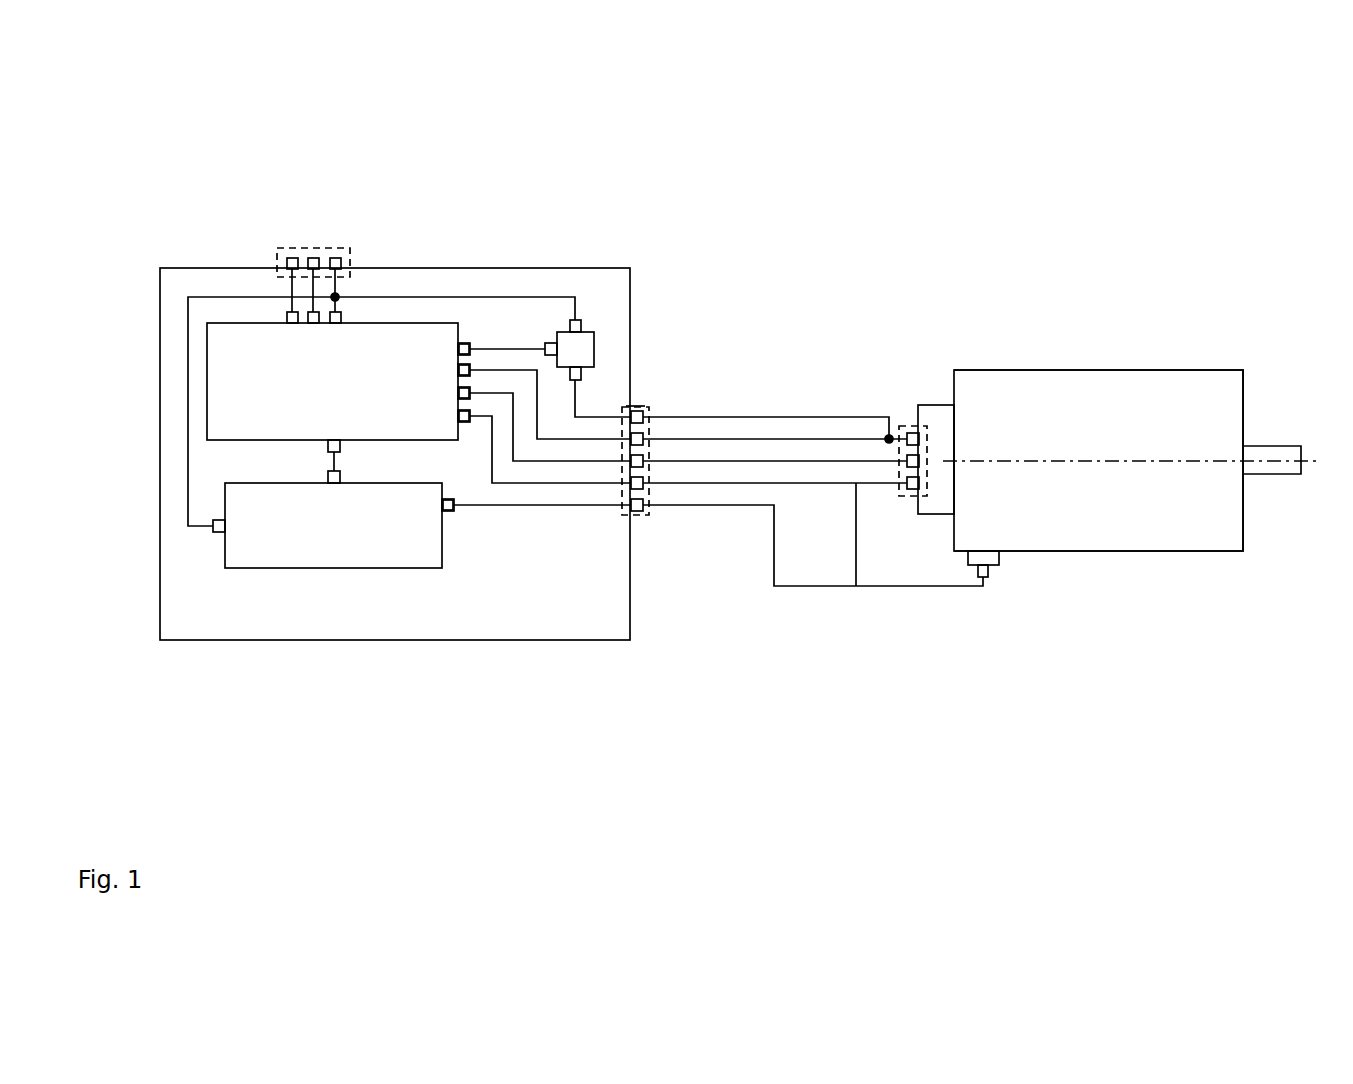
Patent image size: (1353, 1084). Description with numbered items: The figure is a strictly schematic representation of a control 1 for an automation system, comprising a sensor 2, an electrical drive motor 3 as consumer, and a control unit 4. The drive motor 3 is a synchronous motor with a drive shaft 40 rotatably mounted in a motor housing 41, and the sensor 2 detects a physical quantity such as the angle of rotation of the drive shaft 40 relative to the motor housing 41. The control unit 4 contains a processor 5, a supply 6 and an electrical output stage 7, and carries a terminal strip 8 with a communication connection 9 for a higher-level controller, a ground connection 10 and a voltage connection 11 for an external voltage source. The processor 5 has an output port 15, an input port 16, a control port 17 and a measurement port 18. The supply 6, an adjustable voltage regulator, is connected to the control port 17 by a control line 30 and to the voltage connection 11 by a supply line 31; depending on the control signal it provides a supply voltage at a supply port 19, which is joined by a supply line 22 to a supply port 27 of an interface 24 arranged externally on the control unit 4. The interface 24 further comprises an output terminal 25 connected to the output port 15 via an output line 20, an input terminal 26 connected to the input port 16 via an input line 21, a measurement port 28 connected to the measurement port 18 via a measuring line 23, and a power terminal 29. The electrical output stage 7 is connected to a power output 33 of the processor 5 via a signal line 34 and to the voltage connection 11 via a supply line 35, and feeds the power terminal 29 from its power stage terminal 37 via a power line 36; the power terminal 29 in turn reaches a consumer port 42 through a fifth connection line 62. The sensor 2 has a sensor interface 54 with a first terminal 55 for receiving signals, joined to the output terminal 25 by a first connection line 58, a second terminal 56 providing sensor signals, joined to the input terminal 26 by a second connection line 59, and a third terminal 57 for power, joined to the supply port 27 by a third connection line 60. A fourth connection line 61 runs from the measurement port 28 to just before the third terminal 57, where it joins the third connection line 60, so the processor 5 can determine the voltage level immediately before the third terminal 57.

The control 1 is at (1207, 190).
The sensor 2 is at (937, 405).
The drive motor 3 is at (1105, 370).
The control unit 4 is at (158, 302).
The processor 5 is at (437, 323).
The supply 6 is at (590, 331).
The electrical output stage 7 is at (237, 569).
The terminal strip 8 is at (293, 248).
The communication connection 9 is at (288, 265).
The ground connection 10 is at (313, 258).
The voltage connection 11 is at (337, 258).
The output port 15 is at (467, 425).
The input port 16 is at (460, 392).
The control port 17 is at (465, 343).
The measurement port 18 is at (460, 370).
The supply port 19 is at (578, 383).
The output line 20 is at (600, 483).
The input line 21 is at (573, 462).
The supply line 22 is at (633, 412).
The measuring line 23 is at (545, 439).
The interface 24 is at (647, 406).
The output terminal 25 is at (644, 483).
The input terminal 26 is at (644, 461).
The supply port 27 is at (638, 406).
The measurement port 28 is at (643, 438).
The power terminal 29 is at (644, 505).
The control line 30 is at (523, 348).
The supply line 31 is at (513, 297).
The power output 33 is at (328, 445).
The signal line 34 is at (330, 458).
The supply line 35 is at (186, 378).
The power line 36 is at (515, 505).
The power stage terminal 37 is at (448, 510).
The drive shaft 40 is at (1283, 450).
The motor housing 41 is at (1187, 393).
The consumer port 42 is at (990, 560).
The sensor interface 54 is at (900, 425).
The first terminal 55 is at (913, 492).
The second terminal 56 is at (903, 468).
The third terminal 57 is at (910, 425).
The first connection line 58 is at (857, 555).
The second connection line 59 is at (837, 461).
The third connection line 60 is at (708, 417).
The fourth connection line 61 is at (775, 439).
The fifth connection line 62 is at (828, 586).